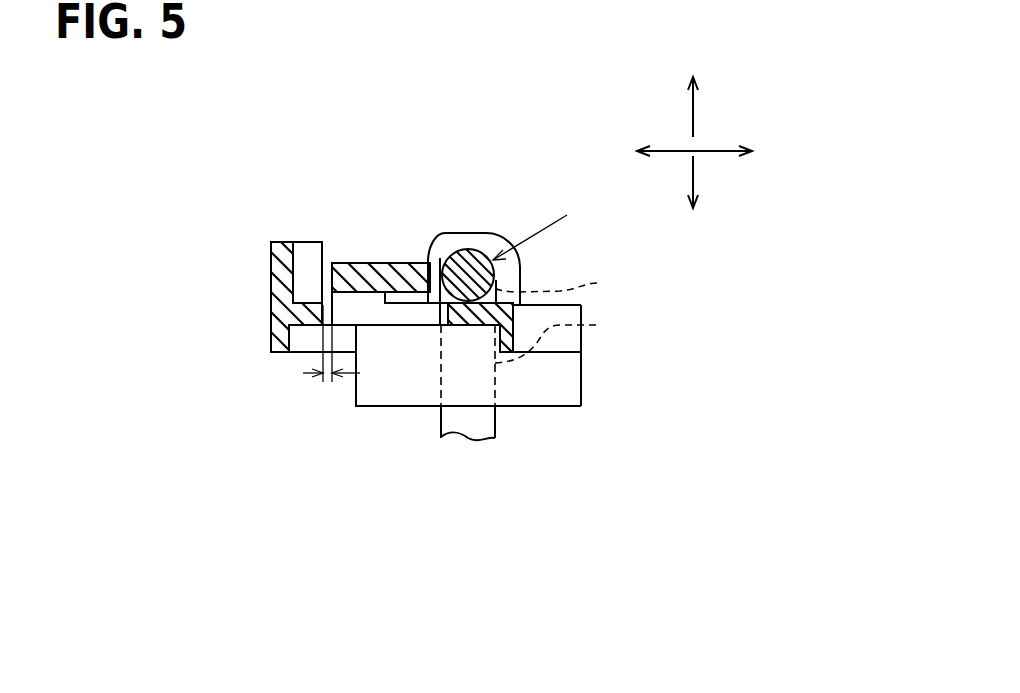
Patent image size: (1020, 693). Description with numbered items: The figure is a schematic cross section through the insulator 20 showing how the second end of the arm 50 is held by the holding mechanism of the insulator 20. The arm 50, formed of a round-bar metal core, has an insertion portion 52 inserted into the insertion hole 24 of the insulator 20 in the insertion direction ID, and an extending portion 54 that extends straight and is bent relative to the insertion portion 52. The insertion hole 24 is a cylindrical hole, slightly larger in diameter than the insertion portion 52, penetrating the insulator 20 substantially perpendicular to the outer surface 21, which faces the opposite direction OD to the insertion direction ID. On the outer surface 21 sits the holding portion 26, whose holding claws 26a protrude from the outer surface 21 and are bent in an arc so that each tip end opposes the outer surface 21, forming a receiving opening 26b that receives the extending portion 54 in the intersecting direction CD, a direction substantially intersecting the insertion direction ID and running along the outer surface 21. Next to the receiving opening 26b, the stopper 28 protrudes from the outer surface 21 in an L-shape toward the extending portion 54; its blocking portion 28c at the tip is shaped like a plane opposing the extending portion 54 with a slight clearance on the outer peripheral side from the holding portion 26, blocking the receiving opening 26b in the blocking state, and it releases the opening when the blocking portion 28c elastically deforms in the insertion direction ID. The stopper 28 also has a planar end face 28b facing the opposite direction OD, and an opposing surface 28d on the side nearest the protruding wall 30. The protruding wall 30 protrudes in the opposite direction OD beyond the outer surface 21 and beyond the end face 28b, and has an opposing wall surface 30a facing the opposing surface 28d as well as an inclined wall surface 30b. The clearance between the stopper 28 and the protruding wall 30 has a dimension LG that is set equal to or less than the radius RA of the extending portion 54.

The insulator 20 is at (584, 360).
The outer surface 21 is at (557, 302).
The insertion hole 24 is at (560, 279).
The holding portion 26 is at (533, 178).
The holding claw 26a is at (482, 250).
The receiving opening 26b is at (444, 233).
The stopper 28 is at (375, 325).
The end face 28b is at (398, 262).
The blocking portion 28c is at (441, 305).
The opposing surface 28d is at (336, 262).
The protruding wall 30 is at (280, 242).
The opposing wall surface 30a is at (313, 242).
The inclined wall surface 30b is at (305, 273).
The arm 50 is at (497, 427).
The insertion portion 52 is at (560, 337).
The extending portion 54 is at (497, 269).
The radius of the extending portion RA is at (545, 229).
The dimension of the clearance LG is at (319, 358).
The opposite direction OD is at (693, 112).
The insertion direction ID is at (693, 178).
The intersecting direction CD is at (706, 150).